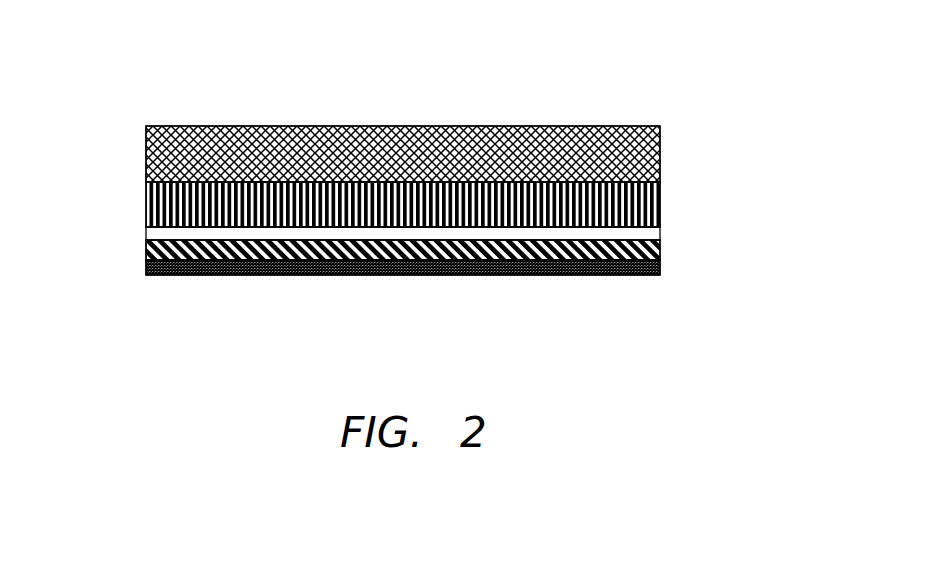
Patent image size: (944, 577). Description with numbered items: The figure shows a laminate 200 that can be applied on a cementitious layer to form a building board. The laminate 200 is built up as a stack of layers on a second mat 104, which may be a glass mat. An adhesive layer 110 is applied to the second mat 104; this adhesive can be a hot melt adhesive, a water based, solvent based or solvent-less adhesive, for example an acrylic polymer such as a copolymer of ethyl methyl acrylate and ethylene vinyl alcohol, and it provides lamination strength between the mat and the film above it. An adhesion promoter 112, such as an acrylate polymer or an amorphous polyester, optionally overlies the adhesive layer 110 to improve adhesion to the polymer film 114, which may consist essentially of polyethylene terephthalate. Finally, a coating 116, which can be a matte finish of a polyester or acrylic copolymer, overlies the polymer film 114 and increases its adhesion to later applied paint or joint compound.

The laminate 200 is at (790, 63).
The second mat 104 is at (649, 152).
The adhesive layer 110 is at (647, 205).
The adhesion promoter 112 is at (650, 234).
The polymer film 114 is at (147, 252).
The coating 116 is at (146, 270).